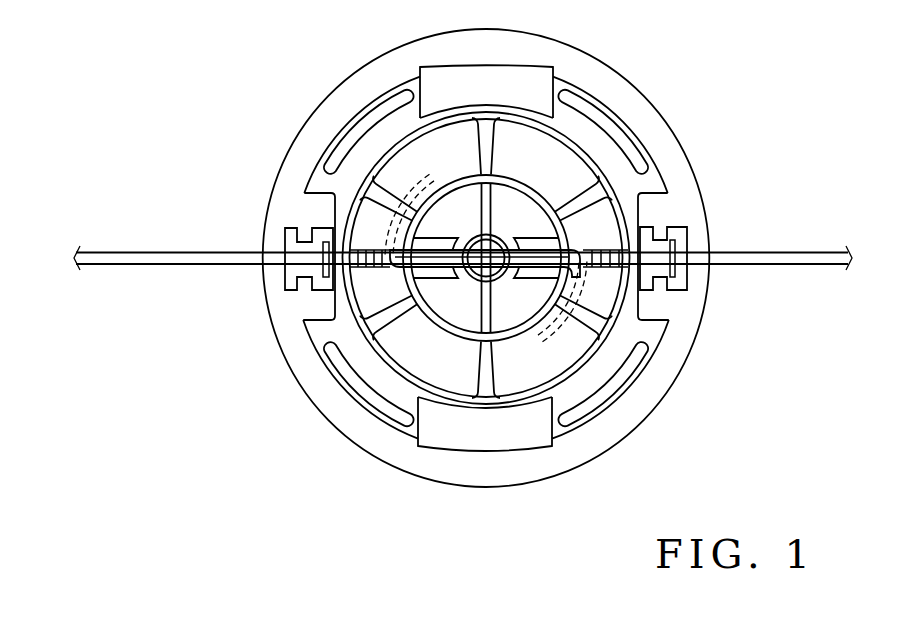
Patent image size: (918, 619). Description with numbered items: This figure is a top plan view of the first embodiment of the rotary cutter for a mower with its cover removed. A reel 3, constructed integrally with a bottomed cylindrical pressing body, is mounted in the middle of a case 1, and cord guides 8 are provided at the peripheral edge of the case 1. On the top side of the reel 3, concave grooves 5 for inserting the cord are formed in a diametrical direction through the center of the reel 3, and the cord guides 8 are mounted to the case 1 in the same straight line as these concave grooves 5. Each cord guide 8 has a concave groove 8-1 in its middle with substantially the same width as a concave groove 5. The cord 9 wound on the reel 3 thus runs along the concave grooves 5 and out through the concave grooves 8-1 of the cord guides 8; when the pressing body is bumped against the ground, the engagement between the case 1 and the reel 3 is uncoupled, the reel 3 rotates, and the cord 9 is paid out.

The case 1 is at (557, 48).
The reel 3 is at (531, 240).
The concave grooves for inserting the cord 5 is at (556, 210).
The cord guides 8 is at (672, 227).
The concave groove 8-1 is at (305, 264).
The cord 9 is at (771, 250).